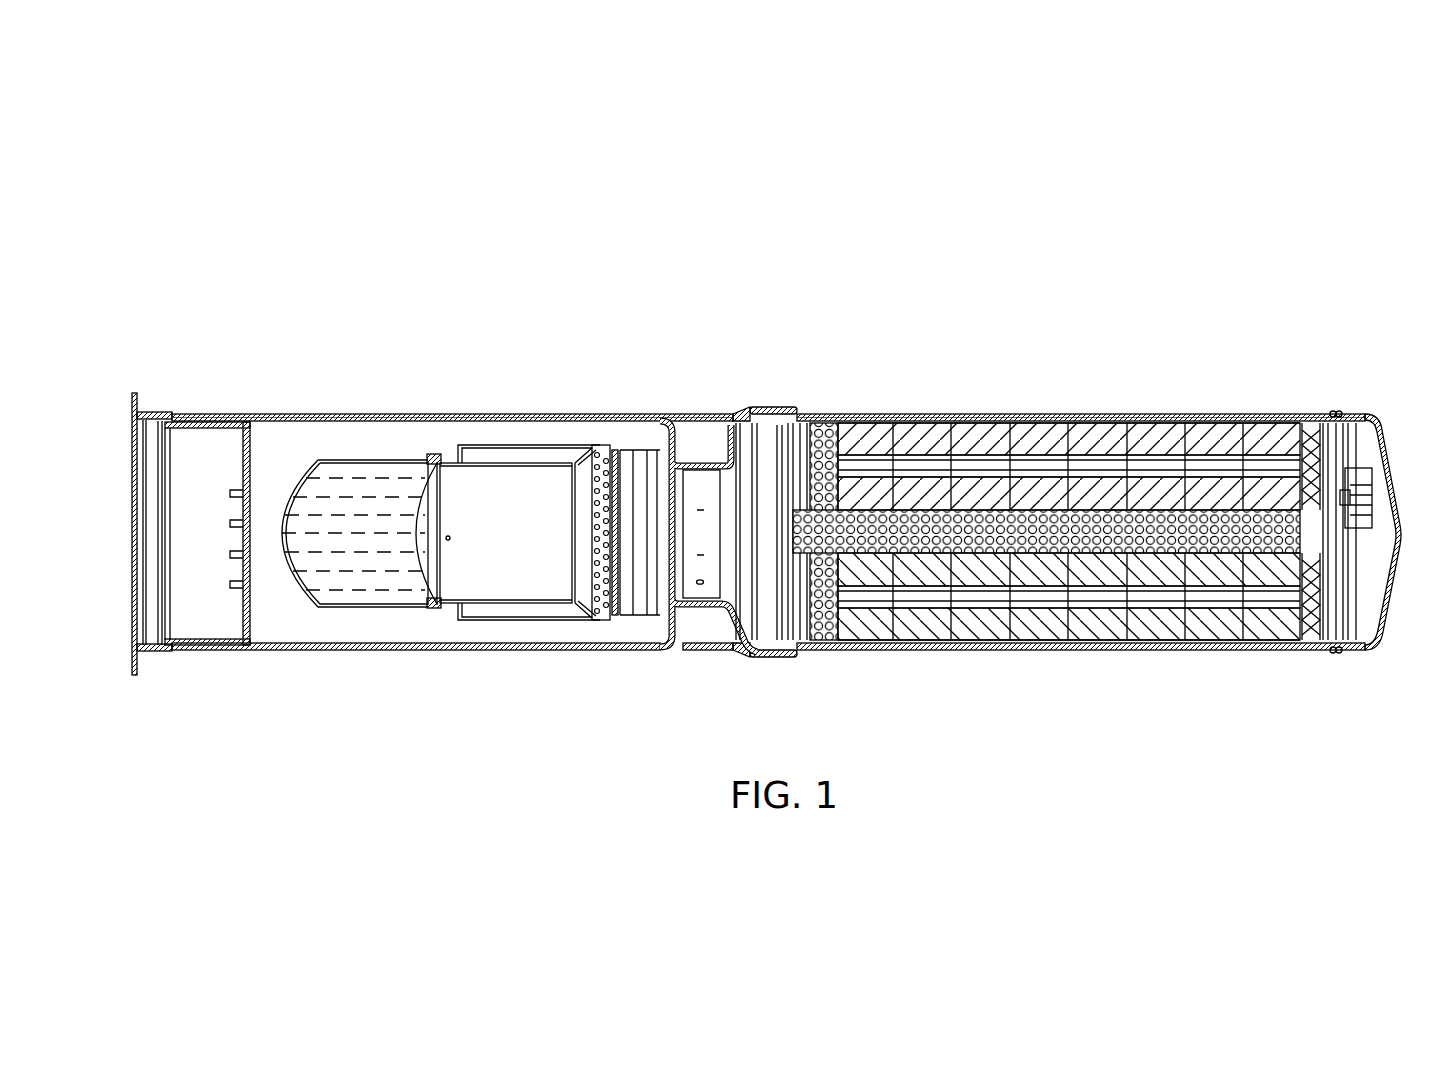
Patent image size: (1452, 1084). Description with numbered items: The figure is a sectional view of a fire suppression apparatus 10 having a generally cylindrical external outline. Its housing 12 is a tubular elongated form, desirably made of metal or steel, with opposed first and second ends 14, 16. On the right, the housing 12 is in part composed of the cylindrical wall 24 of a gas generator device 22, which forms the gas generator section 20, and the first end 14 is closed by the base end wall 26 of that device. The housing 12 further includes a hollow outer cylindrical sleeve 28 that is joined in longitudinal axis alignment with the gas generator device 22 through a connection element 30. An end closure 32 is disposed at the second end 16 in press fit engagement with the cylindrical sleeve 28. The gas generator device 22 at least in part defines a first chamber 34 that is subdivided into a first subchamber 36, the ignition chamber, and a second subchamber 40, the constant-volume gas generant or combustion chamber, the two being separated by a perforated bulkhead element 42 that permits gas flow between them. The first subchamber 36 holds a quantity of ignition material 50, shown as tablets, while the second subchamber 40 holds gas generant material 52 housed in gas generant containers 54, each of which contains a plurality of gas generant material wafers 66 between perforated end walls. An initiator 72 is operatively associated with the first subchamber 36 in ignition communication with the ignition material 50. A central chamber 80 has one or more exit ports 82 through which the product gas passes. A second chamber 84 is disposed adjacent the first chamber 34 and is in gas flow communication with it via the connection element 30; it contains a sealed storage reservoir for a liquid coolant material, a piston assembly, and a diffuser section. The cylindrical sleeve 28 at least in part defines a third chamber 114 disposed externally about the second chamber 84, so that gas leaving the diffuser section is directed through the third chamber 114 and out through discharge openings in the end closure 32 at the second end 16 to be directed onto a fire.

The fire suppression apparatus 10 is at (900, 310).
The housing 12 is at (489, 410).
The first end 14 is at (1370, 398).
The second end 16 is at (175, 376).
The gas generator section 20 is at (1060, 412).
The gas generator device 22 is at (935, 654).
The cylindrical wall 24 is at (963, 414).
The base end wall 26 is at (1381, 625).
The cylindrical sleeve 28 is at (315, 414).
The connection element 30 is at (657, 647).
The end closure 32 is at (147, 662).
The first chamber 34 is at (1143, 520).
The first subchamber 36 is at (1326, 627).
The second subchamber 40 is at (1070, 556).
The bulkhead element 42 is at (1305, 628).
The ignition material 50 is at (1313, 628).
The gas generant material 52 is at (1028, 618).
The gas generant containers 54 is at (829, 652).
The gas generant material wafers 66 is at (1157, 613).
The initiator 72 is at (687, 567).
The central chamber 80 is at (697, 440).
The exit ports 82 is at (617, 495).
The second chamber 84 is at (393, 612).
The third chamber 114 is at (268, 458).